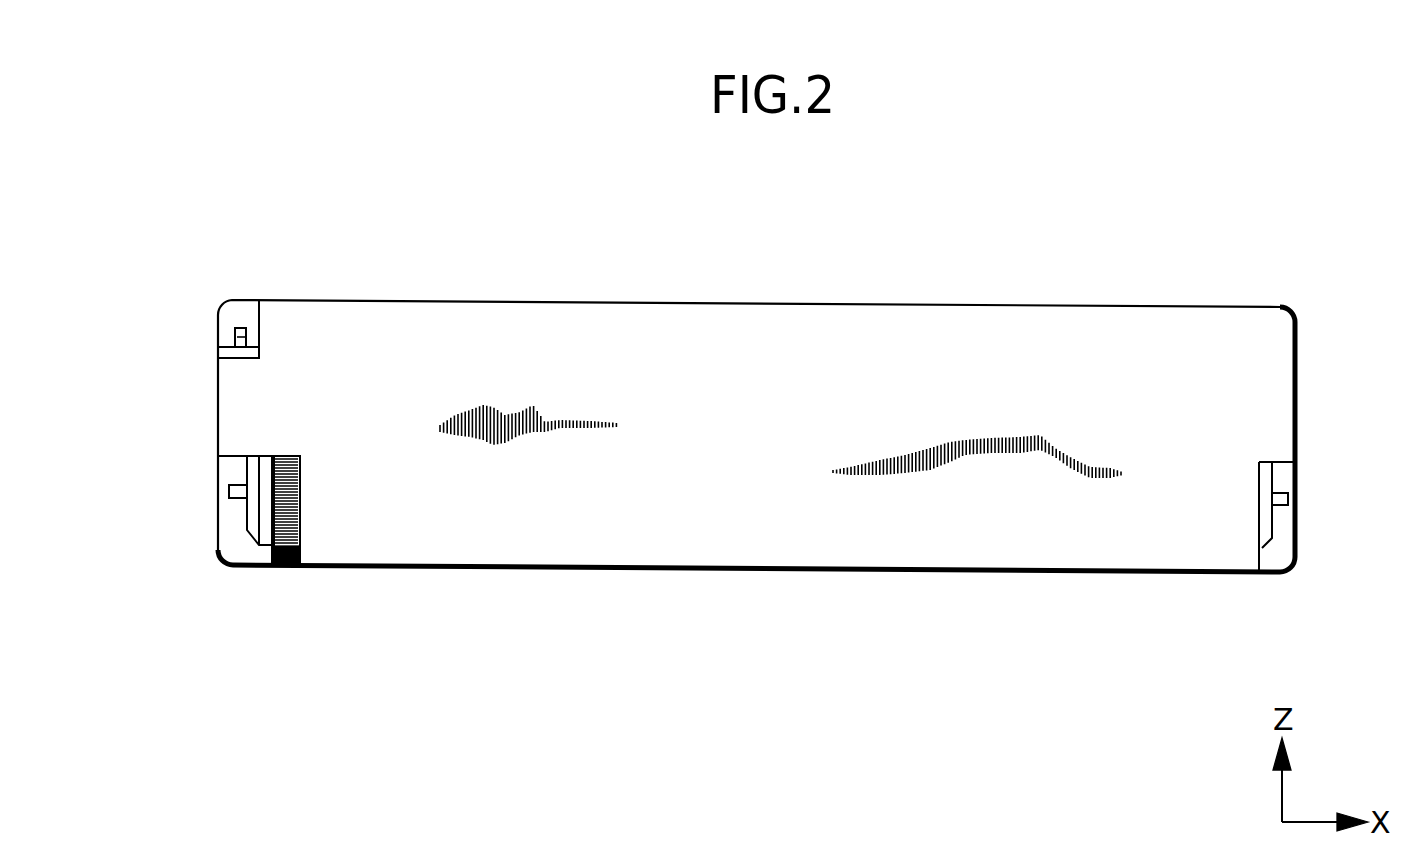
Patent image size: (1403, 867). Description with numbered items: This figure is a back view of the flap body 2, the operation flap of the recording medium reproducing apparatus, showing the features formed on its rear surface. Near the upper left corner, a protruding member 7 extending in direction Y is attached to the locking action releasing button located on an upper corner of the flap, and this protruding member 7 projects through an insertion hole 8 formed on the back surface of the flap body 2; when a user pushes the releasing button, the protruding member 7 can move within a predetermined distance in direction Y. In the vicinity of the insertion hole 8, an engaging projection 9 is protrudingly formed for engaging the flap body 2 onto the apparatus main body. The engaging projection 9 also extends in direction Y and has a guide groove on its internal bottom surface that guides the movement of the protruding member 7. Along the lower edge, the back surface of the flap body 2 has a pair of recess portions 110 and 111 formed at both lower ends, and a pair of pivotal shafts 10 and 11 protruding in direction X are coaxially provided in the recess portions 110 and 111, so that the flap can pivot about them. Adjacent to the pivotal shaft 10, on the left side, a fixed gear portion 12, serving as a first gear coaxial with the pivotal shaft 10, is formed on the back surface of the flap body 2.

The flap body 2 is at (719, 285).
The protruding member 7 is at (246, 340).
The insertion hole 8 is at (240, 328).
The engaging projection 9 is at (236, 352).
The pivotal shaft 10 is at (229, 493).
The pivotal shaft 11 is at (1289, 497).
The fixed gear portion 12 is at (282, 566).
The recess portion 110 is at (232, 525).
The recess portion 111 is at (1279, 555).